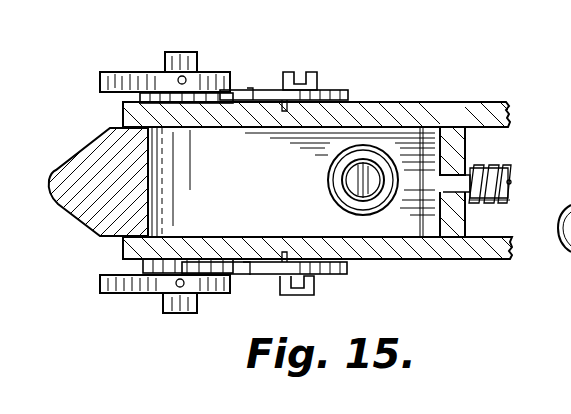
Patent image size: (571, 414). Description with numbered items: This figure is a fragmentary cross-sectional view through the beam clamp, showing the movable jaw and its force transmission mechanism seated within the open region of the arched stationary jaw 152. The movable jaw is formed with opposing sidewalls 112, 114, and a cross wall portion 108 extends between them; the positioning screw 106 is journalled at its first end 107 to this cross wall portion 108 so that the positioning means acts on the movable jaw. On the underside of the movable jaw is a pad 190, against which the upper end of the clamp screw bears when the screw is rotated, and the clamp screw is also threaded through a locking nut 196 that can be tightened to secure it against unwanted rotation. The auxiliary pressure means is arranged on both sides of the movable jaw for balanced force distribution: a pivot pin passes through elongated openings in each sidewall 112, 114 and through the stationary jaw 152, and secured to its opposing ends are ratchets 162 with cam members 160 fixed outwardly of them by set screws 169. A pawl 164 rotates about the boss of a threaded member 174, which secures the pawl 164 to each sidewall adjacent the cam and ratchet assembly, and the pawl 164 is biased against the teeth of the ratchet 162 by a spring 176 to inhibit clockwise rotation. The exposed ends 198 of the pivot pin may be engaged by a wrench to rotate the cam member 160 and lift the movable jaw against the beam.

The positioning screw 106 is at (510, 182).
The first end 107 is at (468, 201).
The cross wall portion 108 is at (467, 148).
The sidewall 112 is at (420, 102).
The sidewall 114 is at (425, 260).
The stationary jaw 152 is at (85, 150).
The cam member 160 is at (115, 72).
The ratchet 162 is at (140, 97).
The pawl 164 is at (340, 90).
The set screw 169 is at (186, 78).
The threaded member 174 is at (300, 88).
The spring 176 is at (249, 90).
The pad 190 is at (362, 178).
The locking nut 196 is at (180, 314).
The exposed end 198 is at (182, 52).